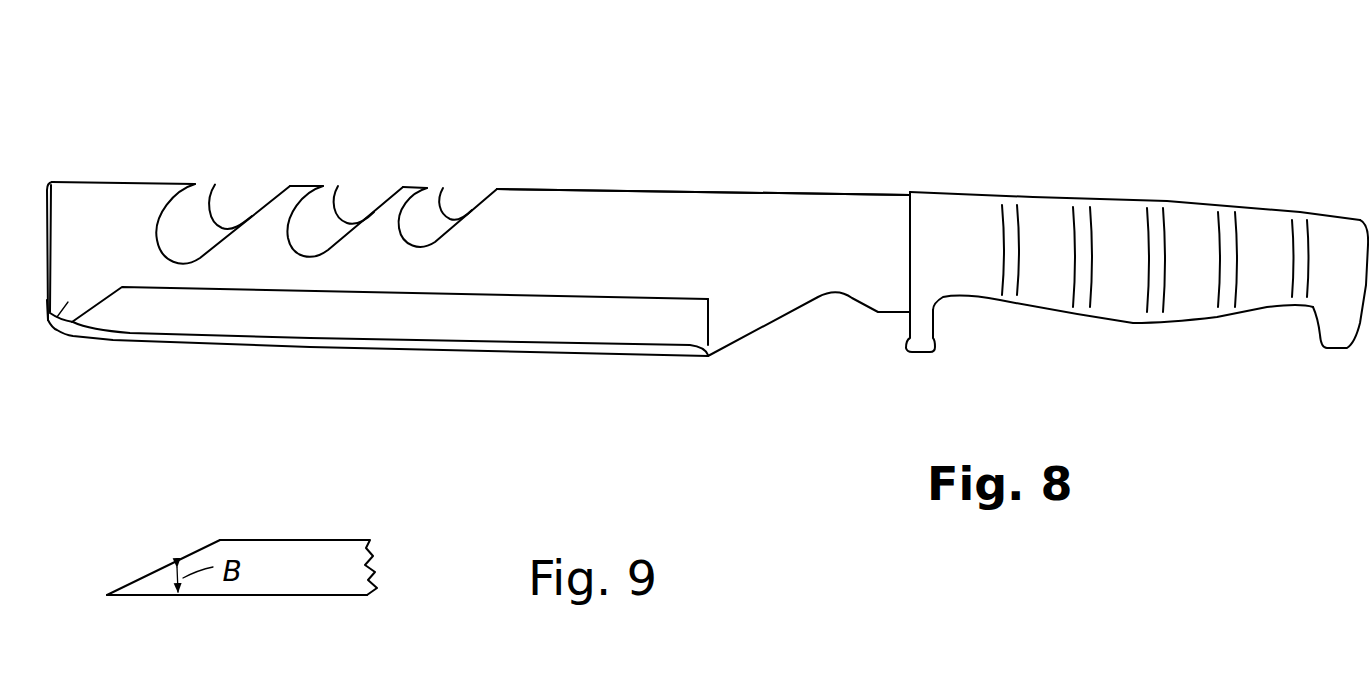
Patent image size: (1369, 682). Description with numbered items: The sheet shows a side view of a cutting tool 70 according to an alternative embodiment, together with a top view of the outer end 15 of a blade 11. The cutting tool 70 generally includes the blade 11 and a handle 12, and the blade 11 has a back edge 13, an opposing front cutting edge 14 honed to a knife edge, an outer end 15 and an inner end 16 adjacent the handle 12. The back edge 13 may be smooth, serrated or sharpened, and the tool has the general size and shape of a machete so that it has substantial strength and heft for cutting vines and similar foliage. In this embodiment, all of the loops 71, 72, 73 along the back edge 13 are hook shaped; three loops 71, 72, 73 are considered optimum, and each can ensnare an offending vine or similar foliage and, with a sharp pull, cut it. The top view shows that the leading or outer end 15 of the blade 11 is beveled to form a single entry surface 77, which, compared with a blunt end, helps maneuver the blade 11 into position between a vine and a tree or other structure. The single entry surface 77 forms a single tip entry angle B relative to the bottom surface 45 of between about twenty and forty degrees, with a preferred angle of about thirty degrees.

In FIG. 8, the cutting tool 70 is at (970, 82).
In FIG. 8, the handle 12 is at (1159, 191).
In FIG. 8, the back edge 13 is at (757, 195).
In FIG. 8, the inner end 16 is at (822, 253).
In FIG. 8, the blade 11 is at (736, 354).
In FIG. 8, the front cutting edge 14 is at (483, 351).
In FIG. 8, the outer end 15 is at (48, 322).
In FIG. 9, the outer end 15 is at (287, 567).
In FIG. 8, the loop 71 is at (484, 191).
In FIG. 8, the loop 72 is at (381, 191).
In FIG. 8, the loop 73 is at (276, 176).
In FIG. 9, the single entry surface 77 is at (142, 577).
In FIG. 9, the bottom surface 45 is at (243, 598).